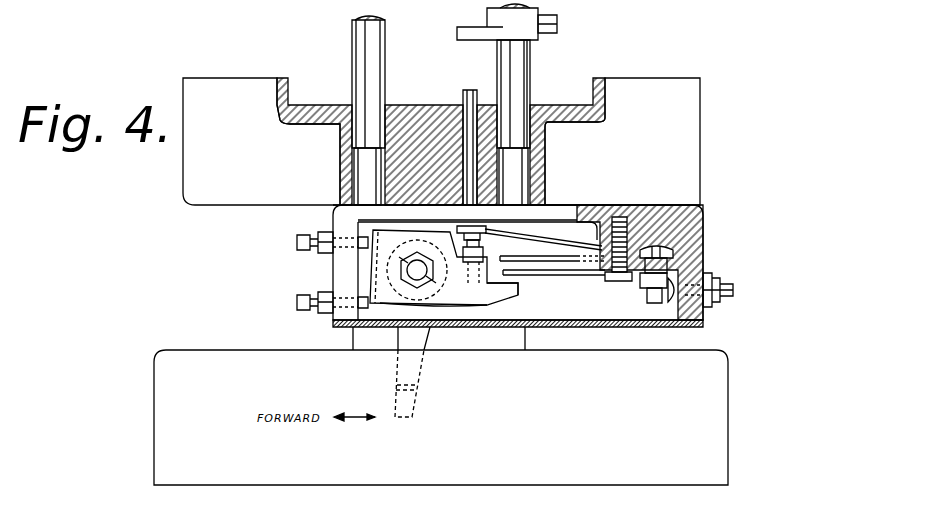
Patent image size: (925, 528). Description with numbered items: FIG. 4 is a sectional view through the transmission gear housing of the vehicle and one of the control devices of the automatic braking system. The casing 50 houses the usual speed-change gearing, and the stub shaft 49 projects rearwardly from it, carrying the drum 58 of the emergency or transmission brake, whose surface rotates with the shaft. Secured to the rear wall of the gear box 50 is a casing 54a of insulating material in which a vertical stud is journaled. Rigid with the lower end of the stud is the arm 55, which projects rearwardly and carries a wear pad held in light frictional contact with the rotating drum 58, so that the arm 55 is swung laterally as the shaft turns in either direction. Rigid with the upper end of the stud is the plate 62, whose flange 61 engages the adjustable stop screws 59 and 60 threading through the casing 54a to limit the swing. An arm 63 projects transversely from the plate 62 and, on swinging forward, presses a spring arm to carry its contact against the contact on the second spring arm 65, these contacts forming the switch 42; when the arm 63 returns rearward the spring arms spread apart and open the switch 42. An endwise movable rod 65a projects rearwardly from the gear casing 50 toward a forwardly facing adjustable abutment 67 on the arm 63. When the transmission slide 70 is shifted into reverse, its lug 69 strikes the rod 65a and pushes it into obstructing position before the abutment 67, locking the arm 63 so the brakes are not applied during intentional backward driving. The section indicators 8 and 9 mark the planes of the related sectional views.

The casing 50 is at (605, 80).
The lug 69 is at (473, 32).
The slide 70 is at (530, 62).
The endwise movable rod 65a is at (467, 98).
The second spring arm 65 is at (566, 205).
The casing 54a is at (703, 245).
The stub shaft 49 is at (517, 334).
The plate 62 is at (358, 228).
The arm 63 is at (487, 300).
The screw 59 is at (358, 250).
The screw 60 is at (333, 316).
The adjustable abutment 67 is at (481, 253).
The switch 42 is at (532, 273).
The flange 61 is at (578, 278).
The arm 55 is at (412, 333).
The drum 58 is at (730, 382).
The section line 8 is at (142, 493).
The section line 9 is at (492, 64).